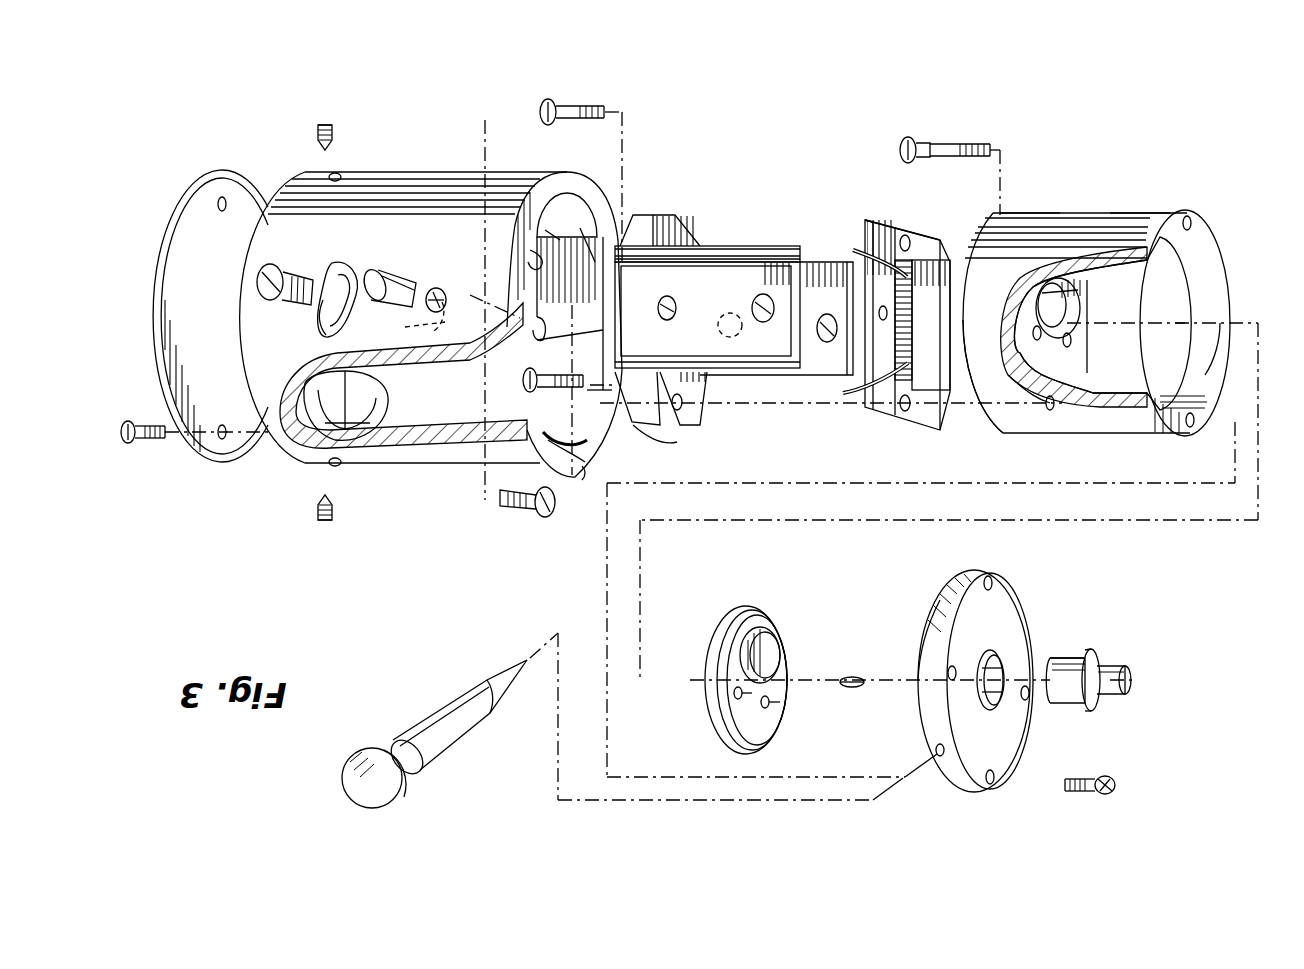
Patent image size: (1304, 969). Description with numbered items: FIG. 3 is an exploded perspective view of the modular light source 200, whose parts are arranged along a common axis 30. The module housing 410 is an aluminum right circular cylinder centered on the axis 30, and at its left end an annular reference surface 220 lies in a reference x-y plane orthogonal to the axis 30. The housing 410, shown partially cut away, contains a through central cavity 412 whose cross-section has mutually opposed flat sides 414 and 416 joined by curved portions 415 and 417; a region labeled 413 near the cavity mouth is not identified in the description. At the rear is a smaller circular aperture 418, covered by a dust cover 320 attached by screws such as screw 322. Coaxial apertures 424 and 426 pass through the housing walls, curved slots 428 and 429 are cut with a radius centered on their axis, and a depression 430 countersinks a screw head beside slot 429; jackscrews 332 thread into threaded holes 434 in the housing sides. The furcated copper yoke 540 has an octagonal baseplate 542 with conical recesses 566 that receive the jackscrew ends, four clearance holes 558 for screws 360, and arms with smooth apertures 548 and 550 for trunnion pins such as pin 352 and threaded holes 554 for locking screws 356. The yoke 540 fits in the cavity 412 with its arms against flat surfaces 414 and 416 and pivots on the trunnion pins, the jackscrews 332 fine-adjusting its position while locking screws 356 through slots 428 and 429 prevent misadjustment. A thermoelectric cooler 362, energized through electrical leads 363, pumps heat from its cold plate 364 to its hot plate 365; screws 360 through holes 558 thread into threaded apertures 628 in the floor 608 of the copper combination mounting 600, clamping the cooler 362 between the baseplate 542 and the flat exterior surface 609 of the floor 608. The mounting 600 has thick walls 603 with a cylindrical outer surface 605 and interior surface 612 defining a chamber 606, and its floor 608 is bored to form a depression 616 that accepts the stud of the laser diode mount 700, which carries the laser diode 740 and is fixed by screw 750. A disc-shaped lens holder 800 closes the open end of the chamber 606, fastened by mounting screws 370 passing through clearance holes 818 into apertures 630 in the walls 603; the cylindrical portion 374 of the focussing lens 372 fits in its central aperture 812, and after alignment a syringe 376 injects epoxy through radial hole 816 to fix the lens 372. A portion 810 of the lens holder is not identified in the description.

The axis 30 is at (1181, 323).
The modular light source 200 is at (903, 108).
The reference surface 220 is at (578, 470).
The dust cover 320 is at (205, 185).
The screw 322 is at (140, 442).
The jackscrew 332 is at (325, 124).
The trunnion pin 352 is at (392, 272).
The locking screw 356 is at (276, 272).
The screw 360 is at (540, 112).
The thermoelectric cooler 362 is at (866, 430).
The electrical lead 363 is at (853, 250).
The cold plate 364 is at (944, 258).
The hot plate 365 is at (866, 218).
The mounting screw 370 is at (1116, 785).
The focussing lens 372 is at (1097, 712).
The cylindrical portion 374 is at (1066, 657).
The syringe 376 is at (462, 690).
The module housing 410 is at (392, 176).
The central cavity 412 is at (575, 218).
The arch surface 413 is at (585, 222).
The first straight side 414 is at (603, 332).
The curved portion 415 is at (595, 470).
The second straight side 416 is at (530, 252).
The curved portion 417 is at (596, 262).
The circular aperture 418 is at (355, 380).
The aperture 424 is at (548, 320).
The aperture 426 is at (438, 289).
The curved through slot 428 is at (418, 327).
The curved through slot 429 is at (336, 268).
The depression 430 is at (322, 318).
The threaded through hole 434 is at (325, 172).
The furcated copper yoke 540 is at (683, 212).
The baseplate 542 is at (645, 432).
The aperture 548 is at (827, 344).
The aperture 550 is at (760, 300).
The threaded hole 554 is at (670, 302).
The aperture 558 is at (685, 236).
The conical recess 566 is at (680, 425).
The combination mounting 600 is at (1085, 212).
The walls 603 is at (1027, 213).
The outer surface 605 is at (1137, 213).
The cavity 606 is at (1195, 297).
The floor 608 is at (1043, 380).
The exterior surface 609 is at (980, 412).
The interior surface 612 is at (1200, 258).
The depression 616 is at (1080, 307).
The threaded aperture 628 is at (1072, 340).
The aperture 630 is at (1189, 216).
The laser mounting element 700 is at (765, 612).
The laser diode 740 is at (851, 677).
The screw 750 is at (900, 152).
The lens holder 800 is at (1018, 572).
The plate rim 810 is at (940, 608).
The central aperture 812 is at (992, 710).
The radial hole 816 is at (936, 750).
The clearance hole 818 is at (995, 779).